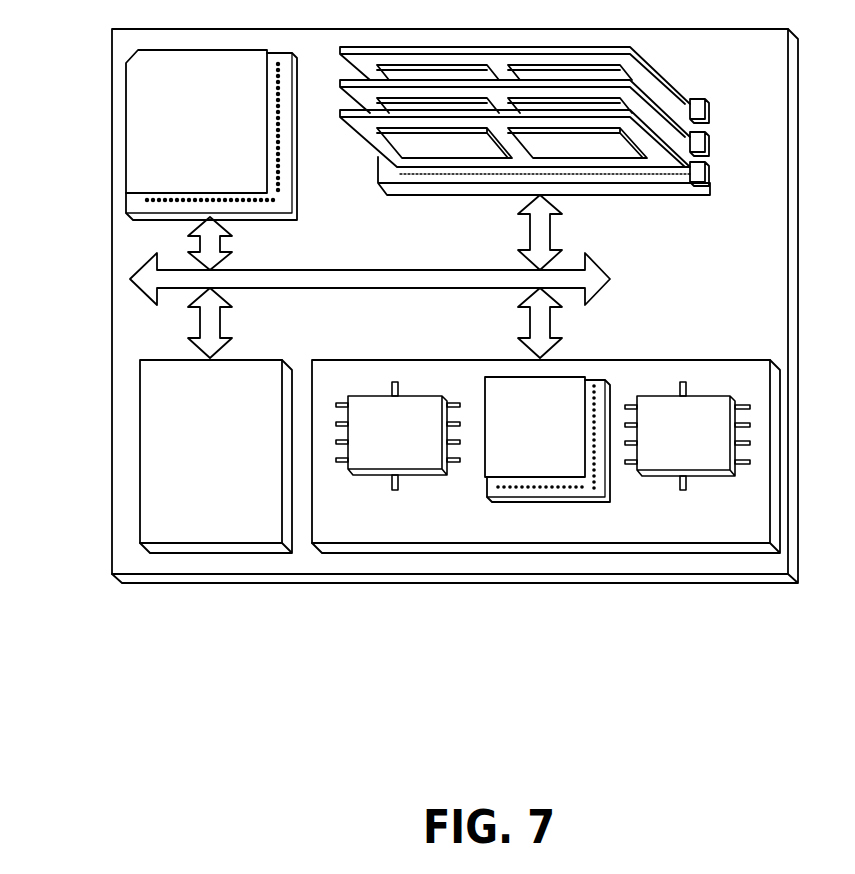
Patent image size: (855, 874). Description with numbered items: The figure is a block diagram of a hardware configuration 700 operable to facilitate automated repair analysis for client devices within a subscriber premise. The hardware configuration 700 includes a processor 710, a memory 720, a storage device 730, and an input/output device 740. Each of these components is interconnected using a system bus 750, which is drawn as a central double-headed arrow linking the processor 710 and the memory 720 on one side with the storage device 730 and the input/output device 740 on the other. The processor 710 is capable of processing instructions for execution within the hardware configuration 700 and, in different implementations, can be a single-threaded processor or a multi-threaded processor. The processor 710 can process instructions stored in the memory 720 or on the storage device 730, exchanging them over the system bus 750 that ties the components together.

The hardware configuration 700 is at (96, 686).
The processor 710 is at (257, 185).
The memory 720 is at (674, 92).
The storage device 730 is at (270, 536).
The input/output device 740 is at (732, 360).
The system bus 750 is at (367, 288).